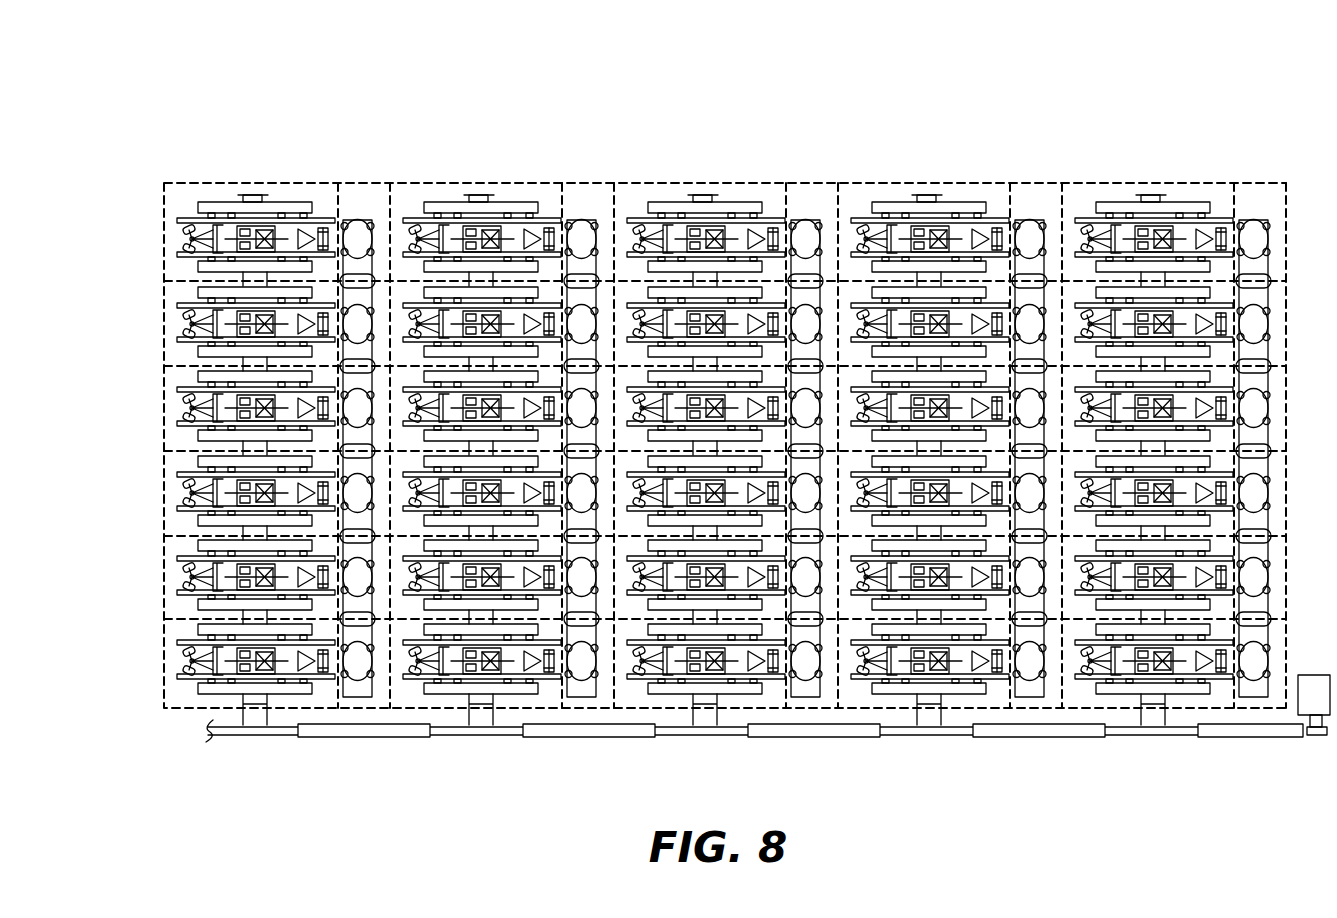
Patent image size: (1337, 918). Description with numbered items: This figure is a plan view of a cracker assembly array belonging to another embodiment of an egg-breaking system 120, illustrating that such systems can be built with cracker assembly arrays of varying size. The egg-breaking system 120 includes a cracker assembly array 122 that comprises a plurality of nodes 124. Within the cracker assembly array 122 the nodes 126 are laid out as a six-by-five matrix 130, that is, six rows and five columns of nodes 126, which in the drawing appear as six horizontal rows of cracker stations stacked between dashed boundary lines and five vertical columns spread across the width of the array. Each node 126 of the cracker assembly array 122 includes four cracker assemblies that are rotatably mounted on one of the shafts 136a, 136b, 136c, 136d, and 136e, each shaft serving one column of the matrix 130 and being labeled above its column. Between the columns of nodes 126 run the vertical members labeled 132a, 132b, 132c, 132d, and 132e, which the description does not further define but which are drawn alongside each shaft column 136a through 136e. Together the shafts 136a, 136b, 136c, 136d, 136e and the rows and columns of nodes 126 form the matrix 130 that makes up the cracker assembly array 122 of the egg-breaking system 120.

The egg-breaking system 120 is at (425, 96).
The cracker assembly array 122 is at (728, 96).
The node 124 is at (1098, 137).
The node 126 is at (177, 274).
The 6×5 matrix 130 is at (873, 114).
The carrier column a 132a is at (348, 213).
The carrier column b 132b is at (572, 213).
The carrier column c 132c is at (796, 213).
The carrier column d 132d is at (1020, 213).
The carrier column e 132e is at (1244, 213).
The shaft 136a is at (253, 194).
The shaft 136b is at (479, 194).
The shaft 136c is at (703, 194).
The shaft 136d is at (927, 194).
The shaft 136e is at (1151, 194).